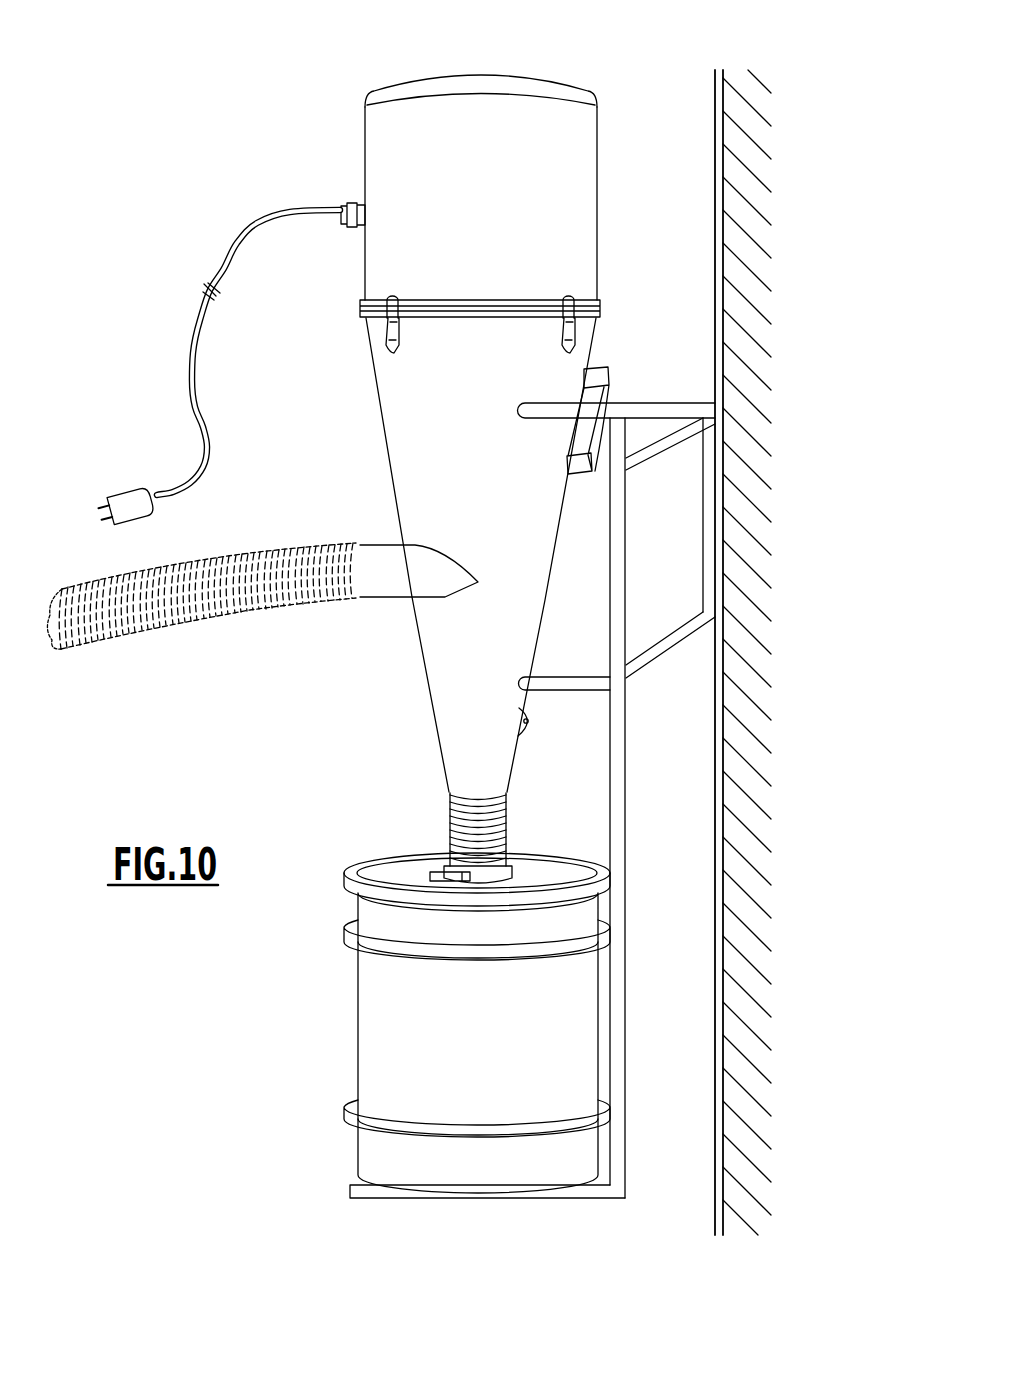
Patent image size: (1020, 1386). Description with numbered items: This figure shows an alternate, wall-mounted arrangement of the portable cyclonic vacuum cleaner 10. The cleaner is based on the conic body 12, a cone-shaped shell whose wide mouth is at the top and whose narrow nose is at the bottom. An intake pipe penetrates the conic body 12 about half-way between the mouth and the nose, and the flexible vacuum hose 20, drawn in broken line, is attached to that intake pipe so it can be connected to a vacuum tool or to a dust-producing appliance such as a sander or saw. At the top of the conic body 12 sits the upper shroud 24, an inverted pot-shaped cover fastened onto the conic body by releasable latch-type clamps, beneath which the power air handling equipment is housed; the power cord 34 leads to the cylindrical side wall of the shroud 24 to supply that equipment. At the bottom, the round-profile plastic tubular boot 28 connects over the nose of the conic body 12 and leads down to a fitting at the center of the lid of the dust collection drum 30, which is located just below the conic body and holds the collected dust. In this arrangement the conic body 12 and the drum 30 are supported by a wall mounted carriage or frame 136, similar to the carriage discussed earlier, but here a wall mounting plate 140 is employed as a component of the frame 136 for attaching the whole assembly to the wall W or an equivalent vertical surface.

The cyclonic vacuum cleaner 10 is at (463, 433).
The conic body 12 is at (366, 446).
The flexible vacuum hose 20 is at (165, 628).
The upper shroud 24 is at (597, 157).
The tubular boot 28 is at (448, 834).
The dust collection drum 30 is at (368, 1040).
The power cord 34 is at (243, 238).
The wall mounted carriage or frame 136 is at (627, 697).
The wall mounting plate 140 is at (703, 518).
The wall W is at (747, 438).